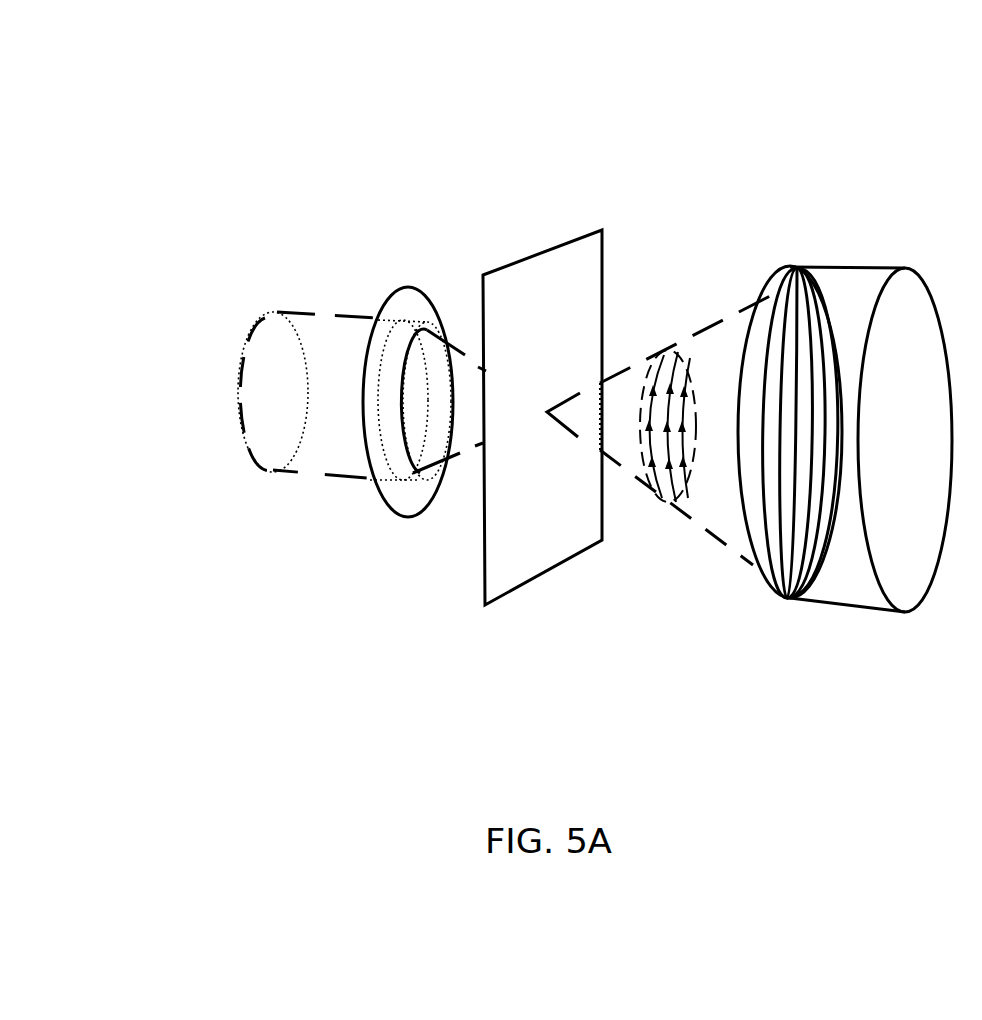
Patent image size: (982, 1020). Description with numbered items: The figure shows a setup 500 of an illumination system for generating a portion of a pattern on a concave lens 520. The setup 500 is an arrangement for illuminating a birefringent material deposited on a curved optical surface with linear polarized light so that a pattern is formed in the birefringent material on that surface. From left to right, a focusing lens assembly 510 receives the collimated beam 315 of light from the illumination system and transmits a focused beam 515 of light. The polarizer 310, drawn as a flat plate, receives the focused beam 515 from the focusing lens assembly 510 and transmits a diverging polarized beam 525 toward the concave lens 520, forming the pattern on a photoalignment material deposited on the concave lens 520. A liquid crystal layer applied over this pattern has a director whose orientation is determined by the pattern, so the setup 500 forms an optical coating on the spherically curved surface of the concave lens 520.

The setup 500 is at (550, 441).
The collimated beam 315 is at (323, 460).
The focusing lens assembly 510 is at (408, 503).
The focused beam 515 is at (465, 358).
The polarizer 310 is at (543, 542).
The diverging polarized beam 525 is at (680, 368).
The concave lens 520 is at (838, 582).